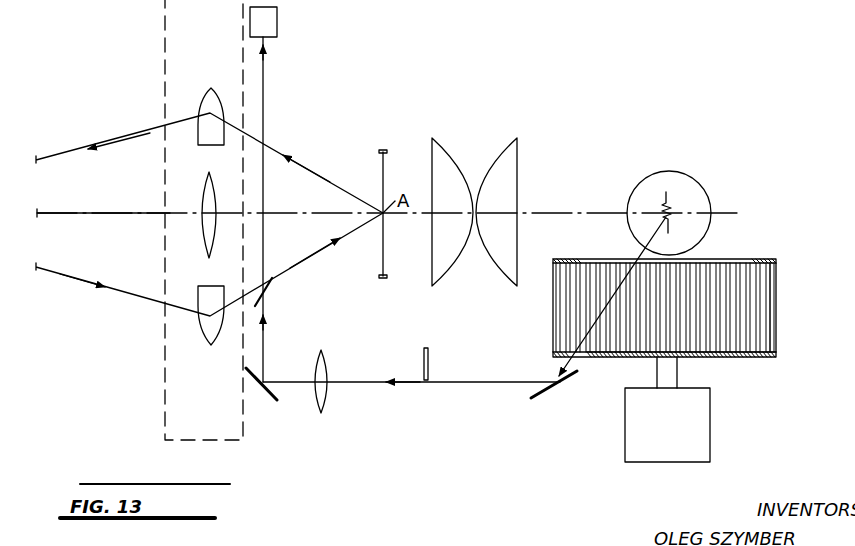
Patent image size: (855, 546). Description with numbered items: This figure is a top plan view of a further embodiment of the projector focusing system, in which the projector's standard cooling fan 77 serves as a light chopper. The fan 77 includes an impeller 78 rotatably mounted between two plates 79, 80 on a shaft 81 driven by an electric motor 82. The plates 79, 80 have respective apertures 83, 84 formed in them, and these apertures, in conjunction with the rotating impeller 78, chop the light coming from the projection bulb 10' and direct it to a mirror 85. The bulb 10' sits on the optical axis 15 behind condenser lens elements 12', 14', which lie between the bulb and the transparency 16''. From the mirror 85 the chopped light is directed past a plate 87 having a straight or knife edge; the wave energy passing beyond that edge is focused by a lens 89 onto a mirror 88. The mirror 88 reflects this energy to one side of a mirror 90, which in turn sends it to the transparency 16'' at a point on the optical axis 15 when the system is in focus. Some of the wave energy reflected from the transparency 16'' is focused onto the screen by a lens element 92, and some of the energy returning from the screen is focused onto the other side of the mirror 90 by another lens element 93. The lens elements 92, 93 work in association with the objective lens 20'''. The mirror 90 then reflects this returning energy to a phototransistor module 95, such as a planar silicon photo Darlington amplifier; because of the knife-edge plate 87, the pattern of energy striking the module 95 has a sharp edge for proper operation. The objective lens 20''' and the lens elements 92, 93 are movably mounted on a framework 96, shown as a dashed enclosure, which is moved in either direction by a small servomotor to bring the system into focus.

The projection bulb 10' is at (683, 205).
The condenser lens 12' is at (514, 198).
The condenser lens 14' is at (452, 198).
The optical axis 15 is at (84, 214).
The transparency 16'' is at (357, 212).
The objective lens 20''' is at (192, 208).
The cooling fan 77 is at (782, 335).
The impeller 78 is at (779, 285).
The plate 79 is at (750, 263).
The plate 80 is at (735, 358).
The drive shaft 81 is at (656, 373).
The electric motor 82 is at (633, 436).
The aperture 83 is at (606, 259).
The aperture 84 is at (596, 358).
The mirror 85 is at (540, 396).
The knife-edge plate 87 is at (428, 356).
The mirror 88 is at (274, 396).
The lens 89 is at (323, 364).
The mirror 90 is at (268, 276).
The lens element 92 is at (210, 100).
The lens element 93 is at (210, 342).
The phototransistor module 95 is at (270, 24).
The framework 96 is at (164, 420).